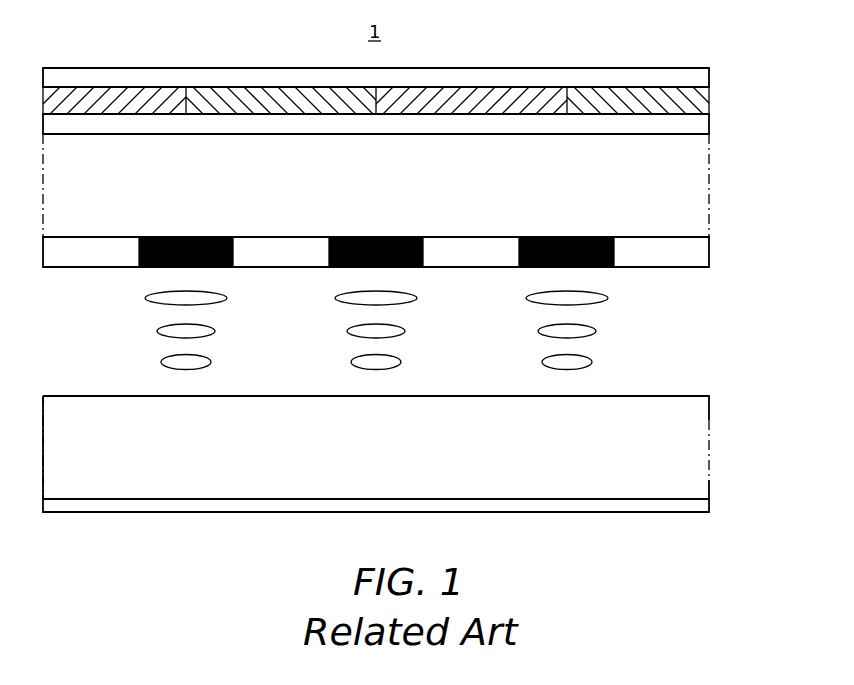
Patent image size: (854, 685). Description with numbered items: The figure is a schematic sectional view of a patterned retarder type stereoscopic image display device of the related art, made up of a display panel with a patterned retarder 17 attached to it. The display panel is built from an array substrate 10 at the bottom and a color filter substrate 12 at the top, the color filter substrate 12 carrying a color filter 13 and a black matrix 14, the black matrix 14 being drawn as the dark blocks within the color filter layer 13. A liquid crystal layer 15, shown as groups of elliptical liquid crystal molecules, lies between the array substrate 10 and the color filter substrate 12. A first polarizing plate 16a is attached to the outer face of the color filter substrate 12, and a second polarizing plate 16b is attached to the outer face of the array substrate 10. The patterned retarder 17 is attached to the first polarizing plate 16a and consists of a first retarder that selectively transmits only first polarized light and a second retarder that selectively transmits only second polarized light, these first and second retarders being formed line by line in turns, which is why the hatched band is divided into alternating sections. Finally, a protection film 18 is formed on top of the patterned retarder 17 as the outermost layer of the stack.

The array substrate 10 is at (697, 452).
The color filter substrate 12 is at (697, 186).
The color filter 13 is at (697, 250).
The black matrix 14 is at (606, 267).
The liquid crystal layer 15 is at (588, 331).
The first polarizing plate 16a is at (697, 125).
The second polarizing plate 16b is at (697, 505).
The patterned retarder 17 is at (697, 98).
The protection film 18 is at (697, 78).